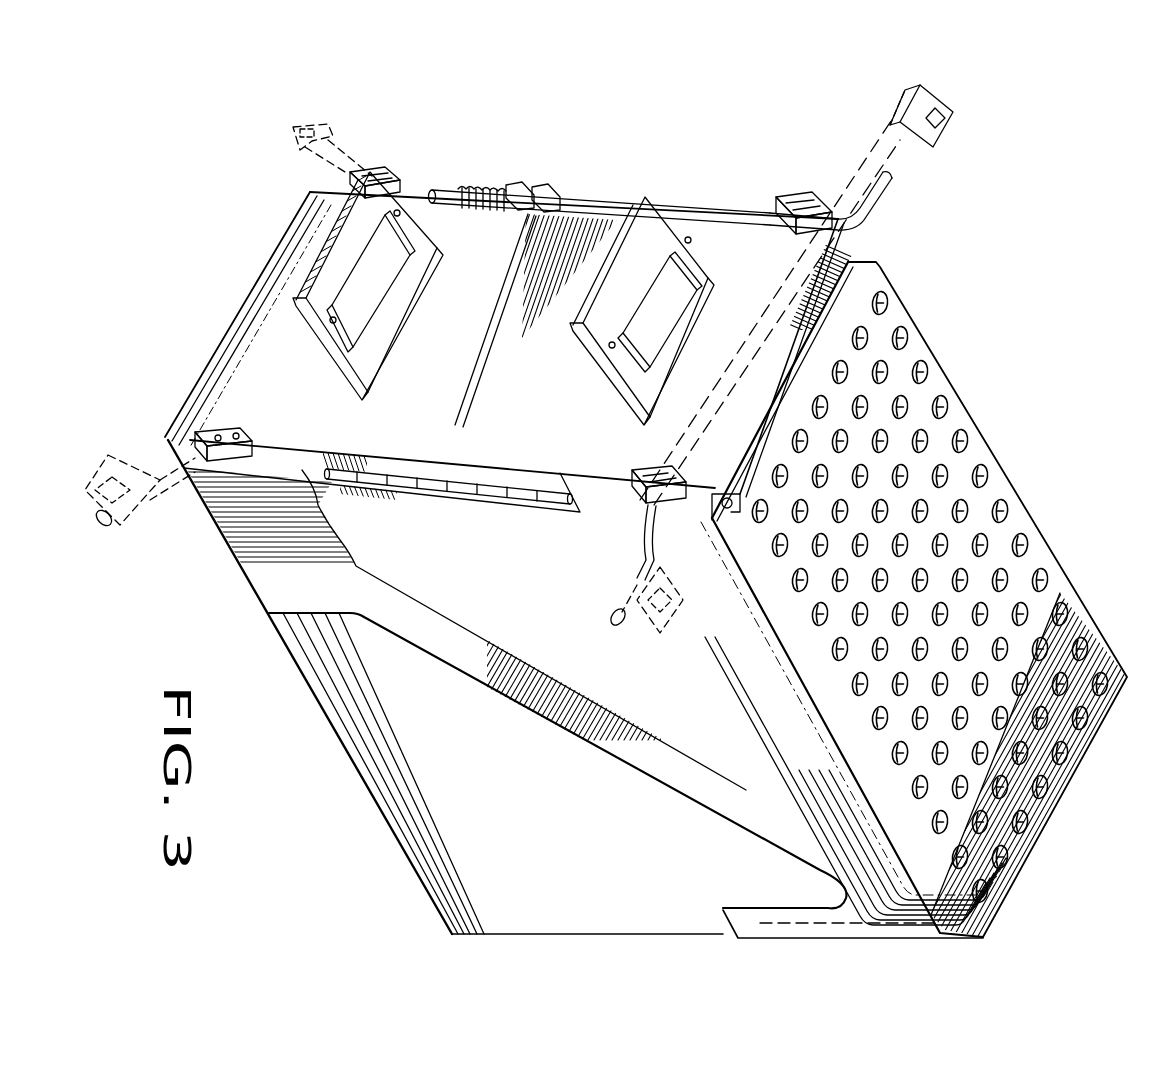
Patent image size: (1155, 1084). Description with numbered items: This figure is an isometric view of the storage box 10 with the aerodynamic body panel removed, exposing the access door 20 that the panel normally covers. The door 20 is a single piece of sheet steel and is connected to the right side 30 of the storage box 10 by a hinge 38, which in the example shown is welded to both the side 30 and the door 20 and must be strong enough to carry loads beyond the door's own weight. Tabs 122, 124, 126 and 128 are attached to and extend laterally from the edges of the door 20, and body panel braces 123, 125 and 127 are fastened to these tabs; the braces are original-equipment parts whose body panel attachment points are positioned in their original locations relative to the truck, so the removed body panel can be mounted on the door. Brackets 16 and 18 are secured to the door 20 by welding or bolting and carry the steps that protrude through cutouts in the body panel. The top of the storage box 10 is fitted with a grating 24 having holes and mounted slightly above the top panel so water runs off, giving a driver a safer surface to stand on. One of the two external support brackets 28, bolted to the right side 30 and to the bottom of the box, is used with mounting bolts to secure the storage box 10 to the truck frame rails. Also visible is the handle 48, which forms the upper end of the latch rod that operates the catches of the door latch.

The storage box 10 is at (1106, 300).
The bracket 16 is at (378, 337).
The bracket 18 is at (600, 358).
The access door 20 is at (240, 312).
The grating 24 is at (1077, 773).
The external support bracket 28 is at (455, 645).
The right side 30 is at (517, 787).
The hinge 38 is at (460, 500).
The handle 48 is at (868, 207).
The tab 122 is at (801, 193).
The body panel brace 123 is at (636, 547).
The tab 124 is at (652, 468).
The body panel brace 125 is at (290, 148).
The tab 126 is at (400, 185).
The body panel brace 127 is at (118, 522).
The tab 128 is at (252, 445).